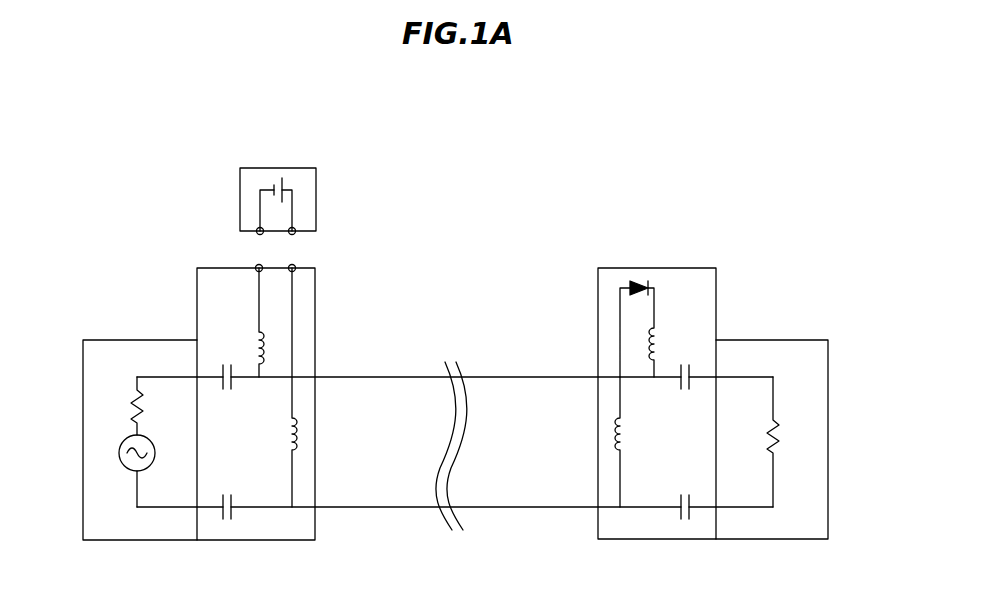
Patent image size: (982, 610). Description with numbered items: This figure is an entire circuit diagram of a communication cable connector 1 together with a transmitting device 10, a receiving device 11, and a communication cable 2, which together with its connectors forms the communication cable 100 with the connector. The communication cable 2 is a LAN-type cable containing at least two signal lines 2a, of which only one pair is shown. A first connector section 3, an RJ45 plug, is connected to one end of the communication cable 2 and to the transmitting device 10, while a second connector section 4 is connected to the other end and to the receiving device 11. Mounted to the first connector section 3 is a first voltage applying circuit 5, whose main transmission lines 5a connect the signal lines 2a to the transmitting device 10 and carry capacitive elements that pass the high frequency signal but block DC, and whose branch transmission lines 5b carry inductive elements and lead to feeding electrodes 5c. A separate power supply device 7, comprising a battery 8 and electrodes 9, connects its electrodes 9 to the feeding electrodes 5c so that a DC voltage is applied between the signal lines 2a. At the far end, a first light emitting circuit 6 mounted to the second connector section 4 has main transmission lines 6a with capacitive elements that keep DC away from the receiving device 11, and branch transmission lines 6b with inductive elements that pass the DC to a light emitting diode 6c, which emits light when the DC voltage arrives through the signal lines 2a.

The communication cable connector 1 is at (748, 240).
The communication cable 2 is at (396, 518).
The signal lines 2a is at (524, 376).
The first connector section 3 is at (197, 268).
The second connector section 4 is at (598, 268).
The first voltage applying circuit 5 is at (250, 416).
The main transmission lines 5a is at (305, 376).
The branch transmission lines 5b is at (262, 314).
The feeding electrodes 5c is at (295, 266).
The first light emitting circuit 6 is at (665, 406).
The main transmission lines 6a is at (607, 376).
The branch transmission lines 6b is at (654, 313).
The light emitting diode 6c is at (684, 311).
The power supply device 7 is at (261, 196).
The battery 8 is at (283, 187).
The electrodes 9 is at (292, 234).
The transmitting device 10 is at (83, 340).
The receiving device 11 is at (828, 340).
The communication cable with the connector 100 is at (456, 283).